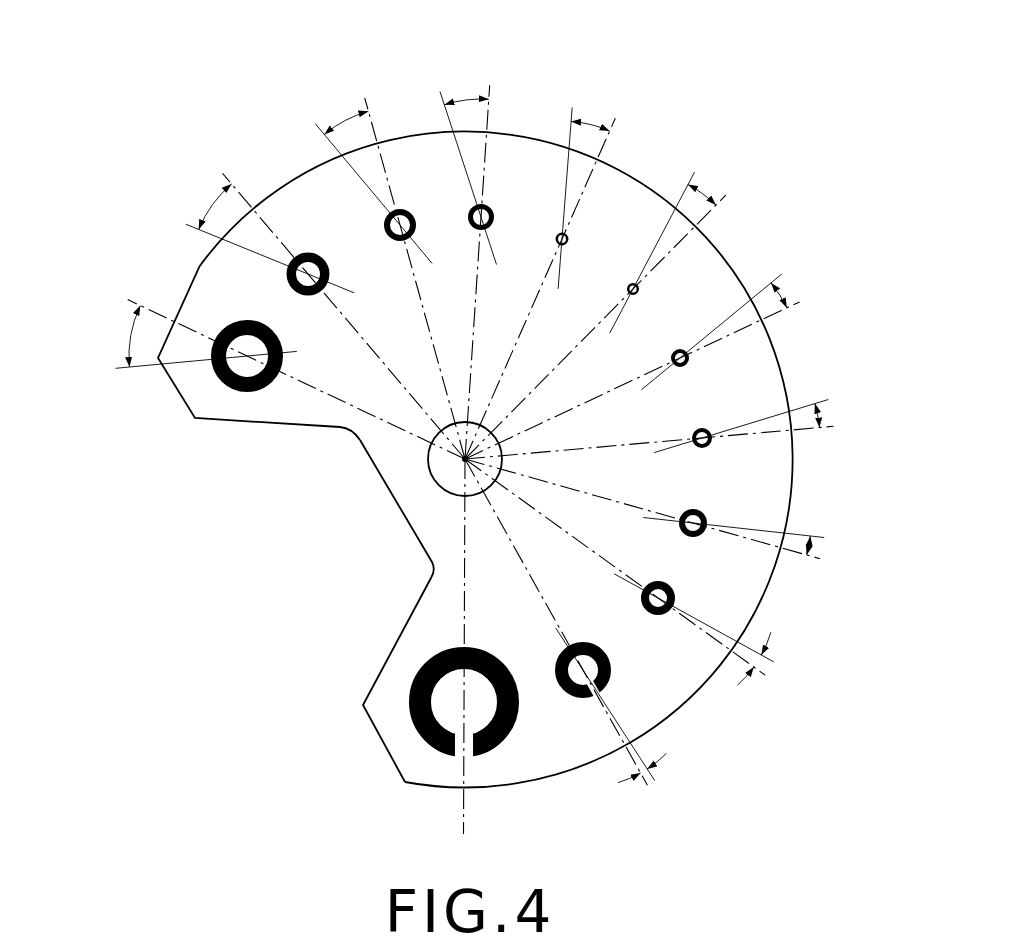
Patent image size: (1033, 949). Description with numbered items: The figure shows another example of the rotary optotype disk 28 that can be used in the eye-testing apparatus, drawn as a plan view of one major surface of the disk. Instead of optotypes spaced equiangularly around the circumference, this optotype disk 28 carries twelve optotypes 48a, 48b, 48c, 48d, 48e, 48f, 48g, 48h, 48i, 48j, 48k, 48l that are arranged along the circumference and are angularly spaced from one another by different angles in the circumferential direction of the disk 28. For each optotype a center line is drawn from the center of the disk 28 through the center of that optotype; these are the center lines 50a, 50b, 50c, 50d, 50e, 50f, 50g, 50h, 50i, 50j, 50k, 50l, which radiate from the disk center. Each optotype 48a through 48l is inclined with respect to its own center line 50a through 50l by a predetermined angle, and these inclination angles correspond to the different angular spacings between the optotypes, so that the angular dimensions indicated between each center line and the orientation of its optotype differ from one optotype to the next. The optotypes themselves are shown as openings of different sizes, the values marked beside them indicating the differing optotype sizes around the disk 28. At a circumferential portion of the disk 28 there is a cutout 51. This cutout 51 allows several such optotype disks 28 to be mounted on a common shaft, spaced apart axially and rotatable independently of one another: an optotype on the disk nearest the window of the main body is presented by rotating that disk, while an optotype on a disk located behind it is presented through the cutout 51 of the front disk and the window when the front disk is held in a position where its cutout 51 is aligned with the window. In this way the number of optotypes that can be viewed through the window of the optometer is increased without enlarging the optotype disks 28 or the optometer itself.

The optotype disk 28 is at (560, 788).
The cutout 51 is at (390, 648).
The optotype 48a is at (517, 707).
The optotype 48b is at (607, 657).
The optotype 48c is at (677, 585).
The optotype 48d is at (700, 510).
The optotype 48e is at (701, 427).
The optotype 48f is at (682, 348).
The optotype 48g is at (631, 283).
The optotype 48h is at (560, 232).
The optotype 48i is at (488, 205).
The optotype 48j is at (407, 212).
The optotype 48k is at (313, 253).
The optotype 48l is at (238, 320).
The center line 50a is at (465, 573).
The center line 50b is at (524, 557).
The center line 50c is at (557, 526).
The center line 50d is at (575, 490).
The center line 50e is at (578, 449).
The center line 50f is at (568, 410).
The center line 50g is at (545, 378).
The center line 50h is at (511, 355).
The center line 50i is at (479, 245).
The center line 50j is at (418, 290).
The center line 50k is at (347, 318).
The center line 50l is at (298, 386).